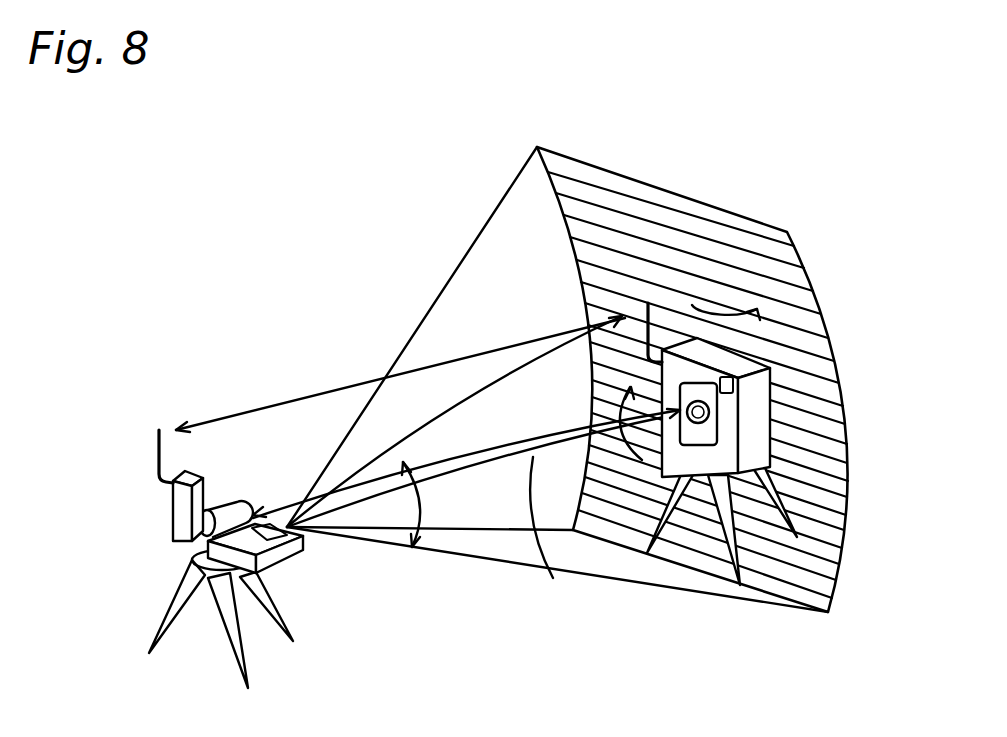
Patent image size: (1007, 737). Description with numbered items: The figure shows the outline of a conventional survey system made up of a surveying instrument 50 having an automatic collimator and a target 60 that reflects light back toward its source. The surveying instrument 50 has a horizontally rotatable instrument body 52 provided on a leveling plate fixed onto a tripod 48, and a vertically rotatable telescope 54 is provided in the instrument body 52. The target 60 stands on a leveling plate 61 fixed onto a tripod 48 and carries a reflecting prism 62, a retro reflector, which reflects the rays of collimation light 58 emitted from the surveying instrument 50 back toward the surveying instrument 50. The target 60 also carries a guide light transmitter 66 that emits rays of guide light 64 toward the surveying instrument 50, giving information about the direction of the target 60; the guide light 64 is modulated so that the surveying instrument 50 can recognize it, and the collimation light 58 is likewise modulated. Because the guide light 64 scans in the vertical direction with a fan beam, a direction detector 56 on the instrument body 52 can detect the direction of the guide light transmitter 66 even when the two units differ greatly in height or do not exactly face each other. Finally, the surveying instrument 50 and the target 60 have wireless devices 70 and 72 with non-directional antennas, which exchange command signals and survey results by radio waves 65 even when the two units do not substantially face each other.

The tripod 48 is at (790, 507).
The surveying instrument 50 is at (782, 411).
The instrument body 52 is at (777, 439).
The telescope 54 is at (728, 362).
The direction detector 56 is at (772, 372).
The collimation light 58 is at (556, 547).
The target 60 is at (217, 542).
The leveling plate 61 is at (192, 557).
The reflecting prism 62 is at (227, 502).
The guide light 64 is at (447, 557).
The radio waves 65 is at (304, 397).
The guide light transmitter 66 is at (293, 562).
The wireless device 70 is at (673, 347).
The wireless device 72 is at (172, 508).